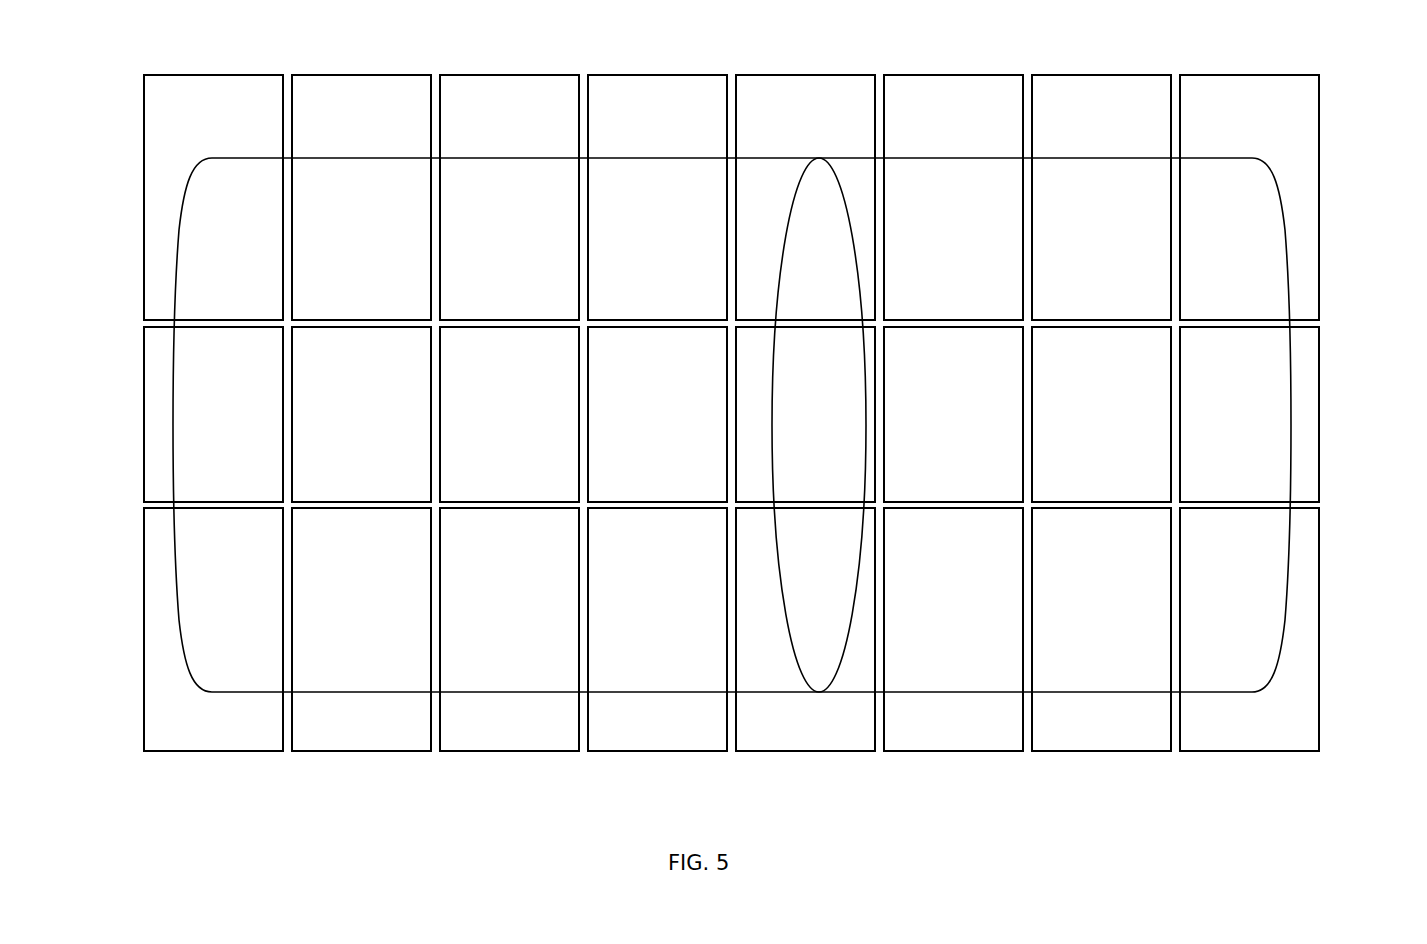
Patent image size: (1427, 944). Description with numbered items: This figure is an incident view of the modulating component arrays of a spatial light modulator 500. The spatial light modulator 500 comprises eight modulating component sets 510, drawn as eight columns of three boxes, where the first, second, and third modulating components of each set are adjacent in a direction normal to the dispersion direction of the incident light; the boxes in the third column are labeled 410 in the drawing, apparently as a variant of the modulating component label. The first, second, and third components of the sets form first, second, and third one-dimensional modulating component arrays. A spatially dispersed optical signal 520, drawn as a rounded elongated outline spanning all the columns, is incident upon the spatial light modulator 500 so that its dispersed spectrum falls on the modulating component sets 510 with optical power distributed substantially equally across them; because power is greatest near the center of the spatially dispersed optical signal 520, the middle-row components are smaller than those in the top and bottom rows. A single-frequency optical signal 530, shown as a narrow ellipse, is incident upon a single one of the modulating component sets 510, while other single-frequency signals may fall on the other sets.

The spatial light modulator 500 is at (121, 865).
The modulating component sets 510 is at (263, 137).
The array element 410 is at (559, 137).
The spatially dispersed optical signal 520 is at (1278, 210).
The single-frequency optical signal 530 is at (843, 198).